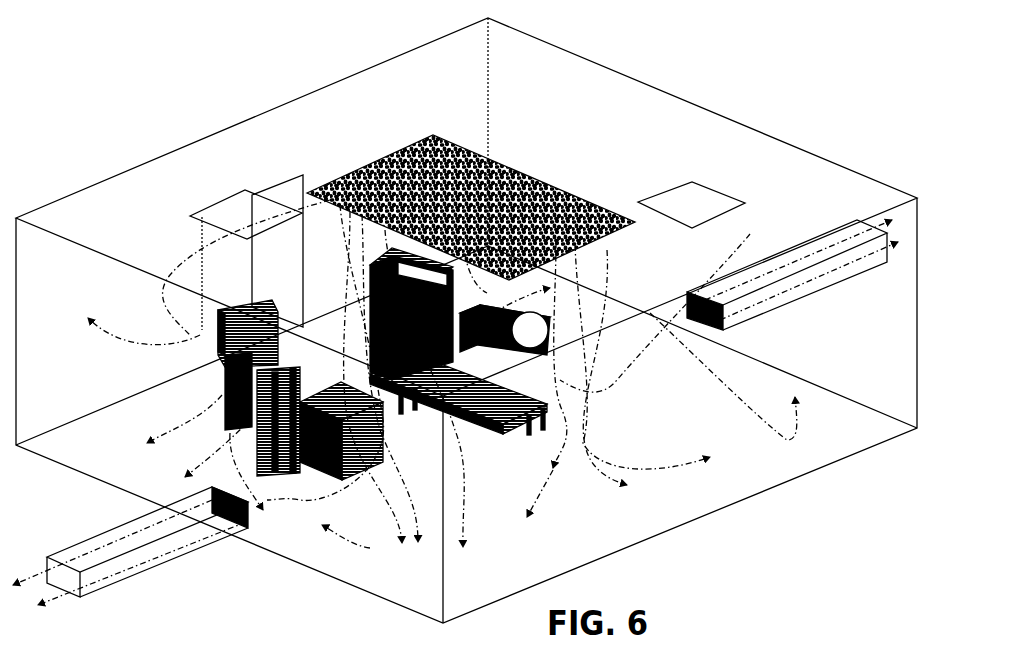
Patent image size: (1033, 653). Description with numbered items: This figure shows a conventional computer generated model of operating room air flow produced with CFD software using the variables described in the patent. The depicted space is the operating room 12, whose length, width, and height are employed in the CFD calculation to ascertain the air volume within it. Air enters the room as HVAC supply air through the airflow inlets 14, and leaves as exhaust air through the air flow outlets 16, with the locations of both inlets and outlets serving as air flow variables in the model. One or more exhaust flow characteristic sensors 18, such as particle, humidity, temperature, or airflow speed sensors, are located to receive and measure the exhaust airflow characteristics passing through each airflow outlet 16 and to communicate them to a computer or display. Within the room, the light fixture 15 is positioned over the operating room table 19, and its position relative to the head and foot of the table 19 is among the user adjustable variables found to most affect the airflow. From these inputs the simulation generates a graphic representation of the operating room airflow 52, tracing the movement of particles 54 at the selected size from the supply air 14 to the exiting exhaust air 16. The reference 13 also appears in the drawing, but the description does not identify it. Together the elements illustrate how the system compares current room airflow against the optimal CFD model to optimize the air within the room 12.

The operating room 12 is at (17, 218).
The cooling system 13 is at (870, 652).
The airflow inlets 14 is at (677, 197).
The light fixture 15 is at (531, 330).
The air flow outlets 16 is at (818, 272).
The exhaust flow characteristic sensors 18 is at (248, 518).
The operating room table 19 is at (506, 428).
The operating room airflow 52 is at (658, 468).
The particles 54 is at (518, 212).